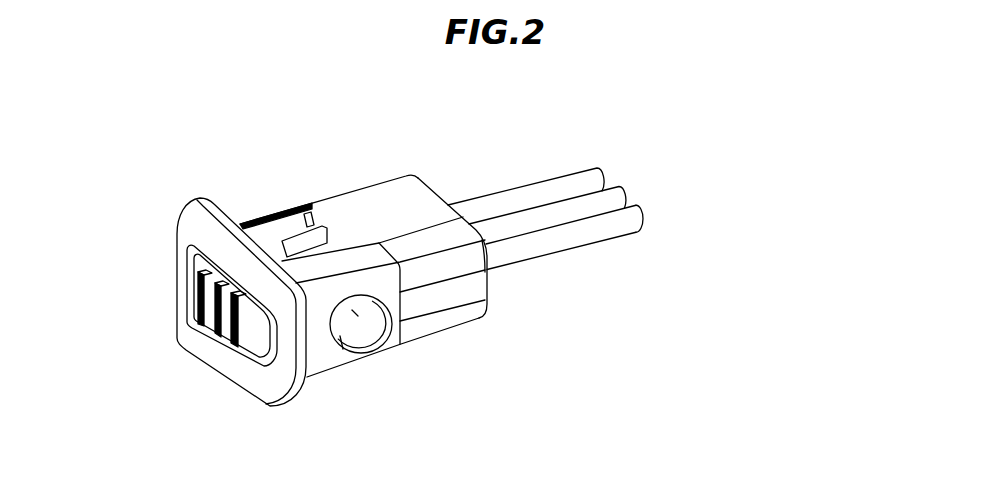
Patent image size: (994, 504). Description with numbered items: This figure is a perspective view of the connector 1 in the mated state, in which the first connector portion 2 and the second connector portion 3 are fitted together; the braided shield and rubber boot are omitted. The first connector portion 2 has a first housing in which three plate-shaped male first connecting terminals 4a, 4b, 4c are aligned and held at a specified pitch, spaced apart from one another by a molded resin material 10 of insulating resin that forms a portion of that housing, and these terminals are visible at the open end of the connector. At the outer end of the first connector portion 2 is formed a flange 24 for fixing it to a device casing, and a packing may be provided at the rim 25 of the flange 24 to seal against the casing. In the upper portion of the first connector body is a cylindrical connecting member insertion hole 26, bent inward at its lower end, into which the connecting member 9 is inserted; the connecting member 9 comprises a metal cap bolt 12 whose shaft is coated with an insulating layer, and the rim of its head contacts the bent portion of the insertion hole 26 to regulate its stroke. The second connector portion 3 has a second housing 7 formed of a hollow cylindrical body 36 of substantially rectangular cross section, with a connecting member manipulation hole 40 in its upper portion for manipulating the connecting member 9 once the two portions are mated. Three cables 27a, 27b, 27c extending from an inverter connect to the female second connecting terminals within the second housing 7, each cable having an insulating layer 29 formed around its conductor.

The connector 1 is at (255, 144).
The first connector portion 2 is at (198, 197).
The second connector portion 3 is at (365, 217).
The first connecting terminal 4a is at (230, 343).
The first connecting terminal 4b is at (213, 317).
The first connecting terminal 4c is at (197, 290).
The second housing 7 is at (423, 184).
The connecting member 9 is at (364, 320).
The molded resin material 10 is at (240, 360).
The bolt 12 is at (340, 340).
The flange 24 is at (226, 212).
The rim 25 is at (197, 218).
The connecting member insertion hole 26 is at (360, 350).
The cable 27a is at (556, 250).
The cable 27b is at (616, 185).
The cable 27c is at (523, 188).
The insulating layer 29 is at (614, 234).
The cylindrical body 36 is at (453, 299).
The connecting member manipulation hole 40 is at (377, 345).